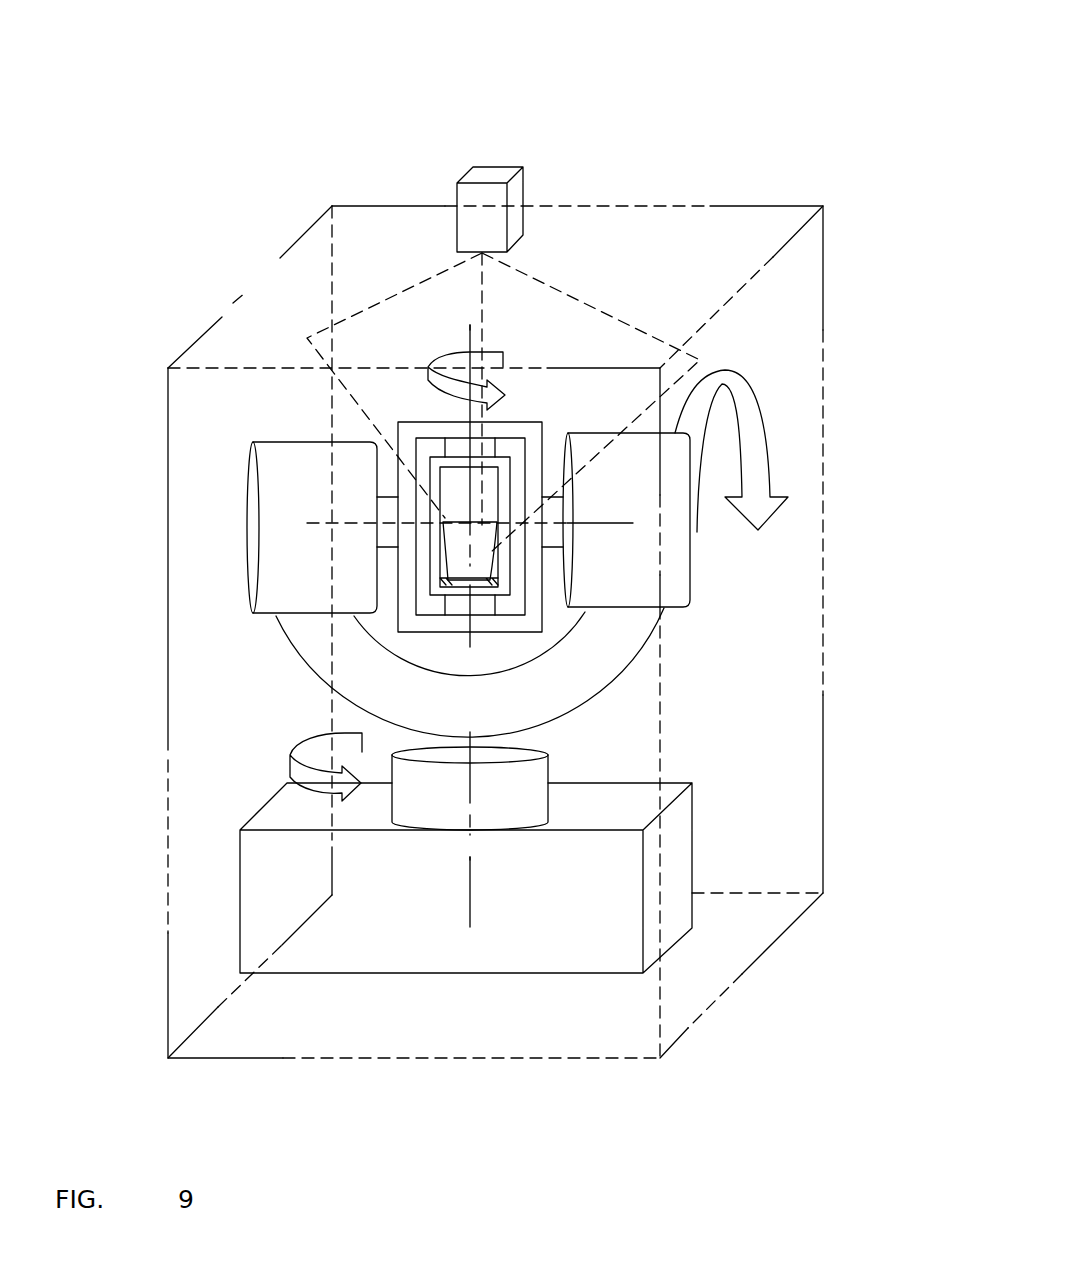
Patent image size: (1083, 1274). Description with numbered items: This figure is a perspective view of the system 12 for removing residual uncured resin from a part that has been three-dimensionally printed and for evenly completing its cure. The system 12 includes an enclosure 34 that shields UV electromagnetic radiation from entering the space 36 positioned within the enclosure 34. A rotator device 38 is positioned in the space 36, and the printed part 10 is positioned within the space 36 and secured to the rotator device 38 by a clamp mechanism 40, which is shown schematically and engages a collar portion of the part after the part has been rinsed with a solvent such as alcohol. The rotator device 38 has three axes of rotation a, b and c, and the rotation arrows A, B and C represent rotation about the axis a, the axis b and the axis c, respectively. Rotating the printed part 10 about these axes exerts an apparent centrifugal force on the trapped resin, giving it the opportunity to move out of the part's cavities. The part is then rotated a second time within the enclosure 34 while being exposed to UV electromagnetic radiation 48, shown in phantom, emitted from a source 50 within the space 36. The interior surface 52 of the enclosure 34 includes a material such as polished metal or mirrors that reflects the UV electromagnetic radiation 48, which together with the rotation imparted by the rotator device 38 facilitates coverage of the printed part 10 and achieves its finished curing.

The 3D printed part 10 is at (482, 532).
The system 12 is at (511, 548).
The enclosure 34 is at (758, 206).
The space 36 is at (243, 689).
The rotator device 38 is at (312, 563).
The clamp mechanism 40 is at (387, 653).
The UV electromagnetic radiation 48 is at (393, 295).
The source 50 is at (470, 188).
The interior surface 52 is at (266, 285).
The rotation arrow A is at (428, 392).
The rotation arrow B is at (755, 470).
The rotation arrow C is at (290, 778).
The axis of rotation a is at (470, 347).
The axis of rotation b is at (597, 522).
The axis of rotation c is at (470, 895).